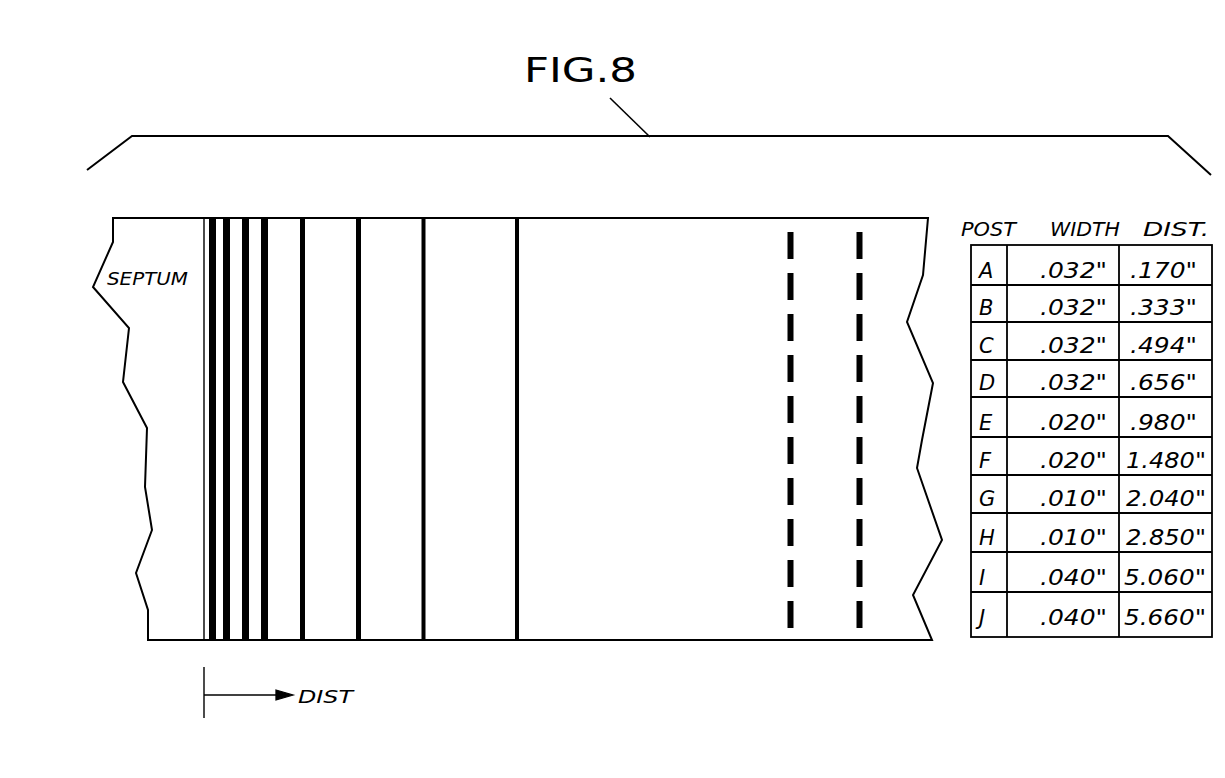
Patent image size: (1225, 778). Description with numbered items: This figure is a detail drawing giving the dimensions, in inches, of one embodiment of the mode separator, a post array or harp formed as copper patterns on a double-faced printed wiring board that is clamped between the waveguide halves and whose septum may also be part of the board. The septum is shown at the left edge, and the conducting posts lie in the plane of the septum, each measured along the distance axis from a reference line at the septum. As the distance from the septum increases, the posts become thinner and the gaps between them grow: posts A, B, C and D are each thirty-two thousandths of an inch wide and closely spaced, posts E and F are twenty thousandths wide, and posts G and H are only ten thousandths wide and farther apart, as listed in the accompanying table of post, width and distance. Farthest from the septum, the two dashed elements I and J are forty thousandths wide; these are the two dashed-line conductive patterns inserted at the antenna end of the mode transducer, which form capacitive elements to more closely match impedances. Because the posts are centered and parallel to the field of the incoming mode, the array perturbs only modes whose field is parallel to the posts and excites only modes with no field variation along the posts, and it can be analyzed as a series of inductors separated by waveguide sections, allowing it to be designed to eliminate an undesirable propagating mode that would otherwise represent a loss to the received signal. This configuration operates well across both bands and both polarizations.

The post A is at (210, 217).
The post B is at (225, 217).
The post C is at (243, 217).
The post D is at (264, 217).
The post E is at (302, 217).
The post F is at (358, 217).
The post G is at (424, 217).
The post H is at (517, 217).
The dashed line conductive pattern I is at (791, 228).
The dashed line conductive pattern J is at (860, 228).